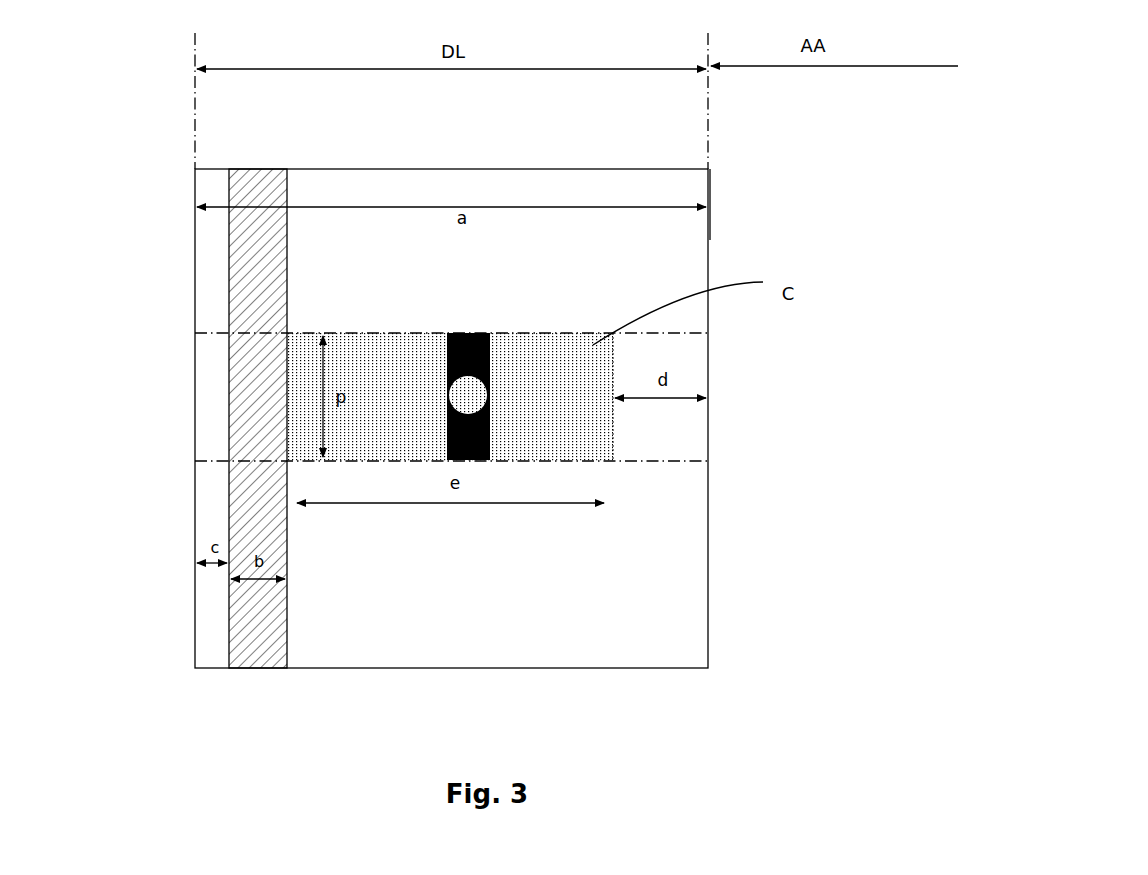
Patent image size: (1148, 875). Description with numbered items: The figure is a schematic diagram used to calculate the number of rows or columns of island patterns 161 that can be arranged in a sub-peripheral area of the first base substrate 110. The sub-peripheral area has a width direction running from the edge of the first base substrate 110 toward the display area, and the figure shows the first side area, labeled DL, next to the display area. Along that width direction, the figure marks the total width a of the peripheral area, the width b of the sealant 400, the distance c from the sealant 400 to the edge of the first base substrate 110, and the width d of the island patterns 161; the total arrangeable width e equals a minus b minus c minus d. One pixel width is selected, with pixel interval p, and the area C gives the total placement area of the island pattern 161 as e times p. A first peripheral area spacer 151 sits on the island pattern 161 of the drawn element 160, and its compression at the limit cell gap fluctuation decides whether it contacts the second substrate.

The first base substrate 110 is at (195, 246).
The sealant 400 is at (243, 407).
The first peripheral area spacer 151 is at (473, 462).
The light emitting element 160 is at (498, 354).
The island pattern 161 is at (468, 395).